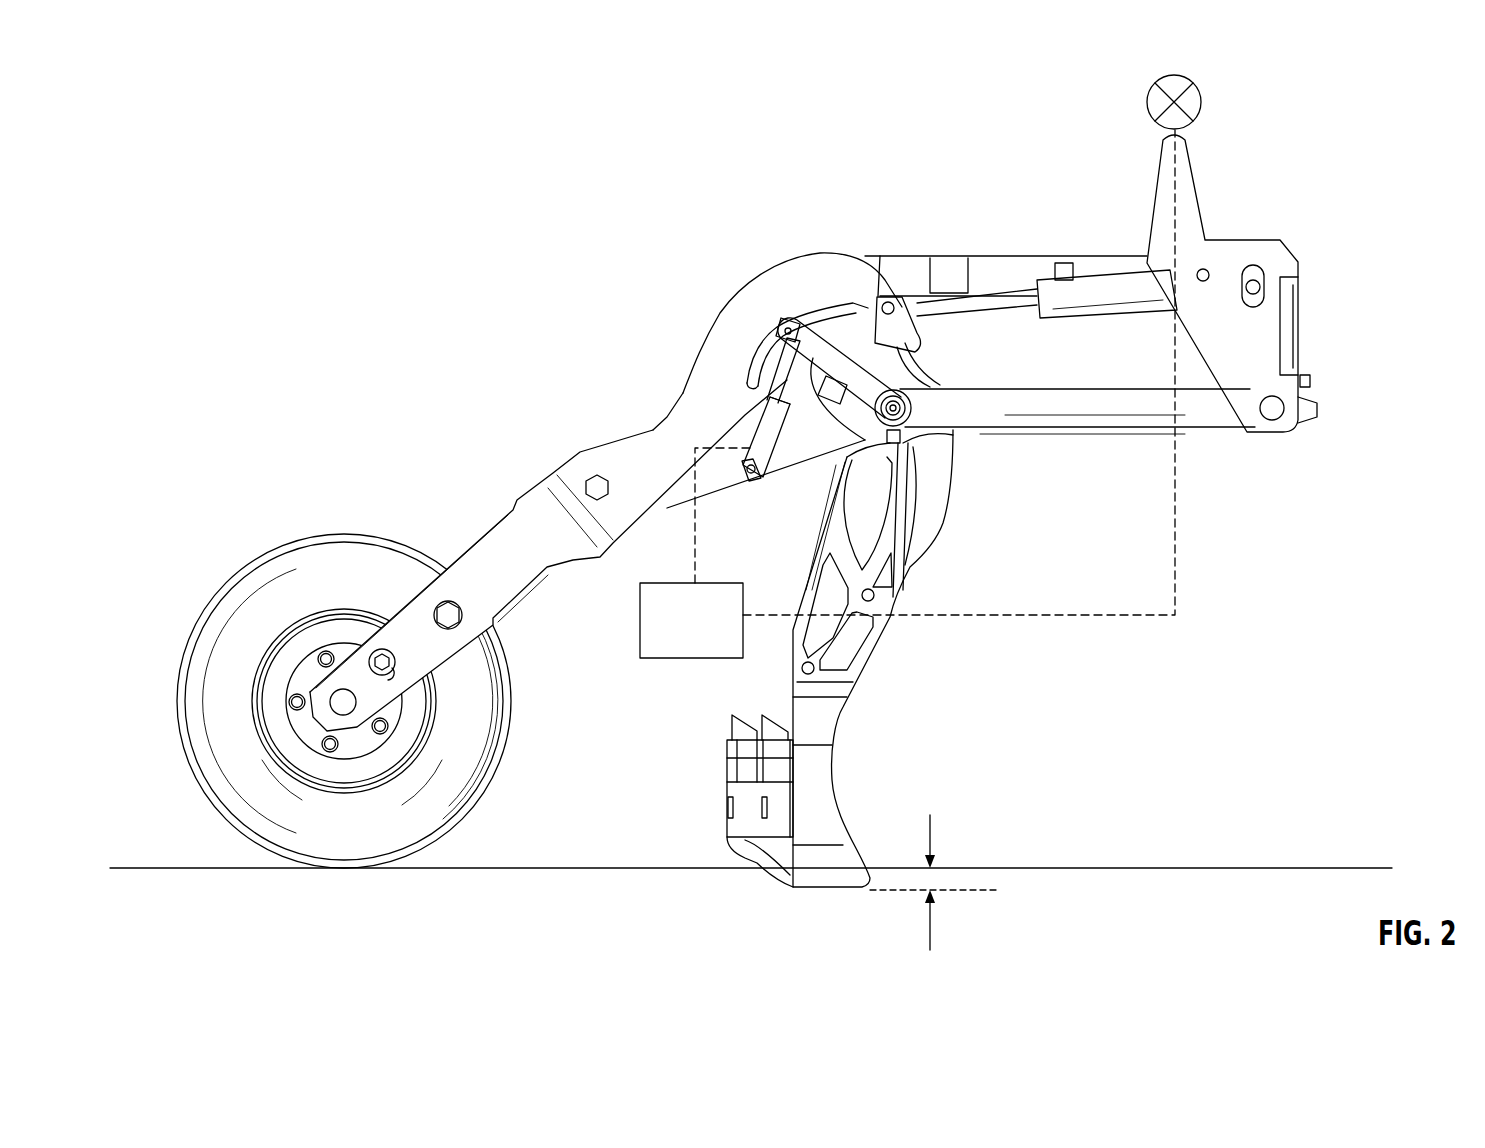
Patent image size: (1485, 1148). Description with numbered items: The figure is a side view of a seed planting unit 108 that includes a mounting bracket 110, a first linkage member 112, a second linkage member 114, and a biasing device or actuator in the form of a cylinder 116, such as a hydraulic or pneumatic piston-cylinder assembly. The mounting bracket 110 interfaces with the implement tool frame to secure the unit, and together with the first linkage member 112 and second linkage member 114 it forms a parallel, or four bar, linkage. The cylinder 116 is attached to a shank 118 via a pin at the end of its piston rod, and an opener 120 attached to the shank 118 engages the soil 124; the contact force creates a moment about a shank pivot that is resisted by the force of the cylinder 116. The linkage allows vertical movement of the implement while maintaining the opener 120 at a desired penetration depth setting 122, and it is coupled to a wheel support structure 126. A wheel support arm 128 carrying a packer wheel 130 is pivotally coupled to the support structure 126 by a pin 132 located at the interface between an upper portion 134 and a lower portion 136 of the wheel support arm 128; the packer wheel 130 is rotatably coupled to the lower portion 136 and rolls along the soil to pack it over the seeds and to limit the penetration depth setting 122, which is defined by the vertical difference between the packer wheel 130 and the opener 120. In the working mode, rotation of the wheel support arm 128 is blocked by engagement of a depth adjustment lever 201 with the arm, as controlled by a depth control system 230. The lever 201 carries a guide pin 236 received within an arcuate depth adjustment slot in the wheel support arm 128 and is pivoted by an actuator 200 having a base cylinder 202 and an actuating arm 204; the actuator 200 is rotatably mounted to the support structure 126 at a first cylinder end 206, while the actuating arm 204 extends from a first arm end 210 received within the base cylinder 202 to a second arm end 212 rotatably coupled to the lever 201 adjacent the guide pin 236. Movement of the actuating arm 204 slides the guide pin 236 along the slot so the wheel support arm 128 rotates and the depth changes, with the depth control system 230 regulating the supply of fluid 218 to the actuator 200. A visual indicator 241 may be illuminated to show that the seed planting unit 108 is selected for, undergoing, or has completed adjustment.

The seed planting unit 108 is at (556, 347).
The mounting bracket 110 is at (1190, 202).
The first linkage member 112 is at (1087, 403).
The second linkage member 114 is at (990, 267).
The cylinder 116 is at (1088, 290).
The shank 118 is at (910, 562).
The opener 120 is at (830, 862).
The penetration depth setting 122 is at (932, 834).
The soil 124 is at (1152, 866).
The support structure 126 is at (713, 480).
The wheel support arm 128 is at (690, 428).
The packer wheel 130 is at (343, 553).
The pin 132 is at (592, 474).
The upper portion 134 is at (675, 437).
The lower portion 136 is at (540, 510).
The actuator 200 is at (760, 372).
The depth adjustment lever 201 is at (905, 365).
The base cylinder 202 is at (841, 298).
The actuating arm 204 is at (782, 368).
The first cylinder end 206 is at (746, 478).
The first arm end 210 is at (768, 403).
The second arm end 212 is at (878, 268).
The fluid 218 is at (775, 404).
The depth control system 230 is at (707, 638).
The guide pin 236 is at (787, 318).
The visual indicator 241 is at (1192, 86).